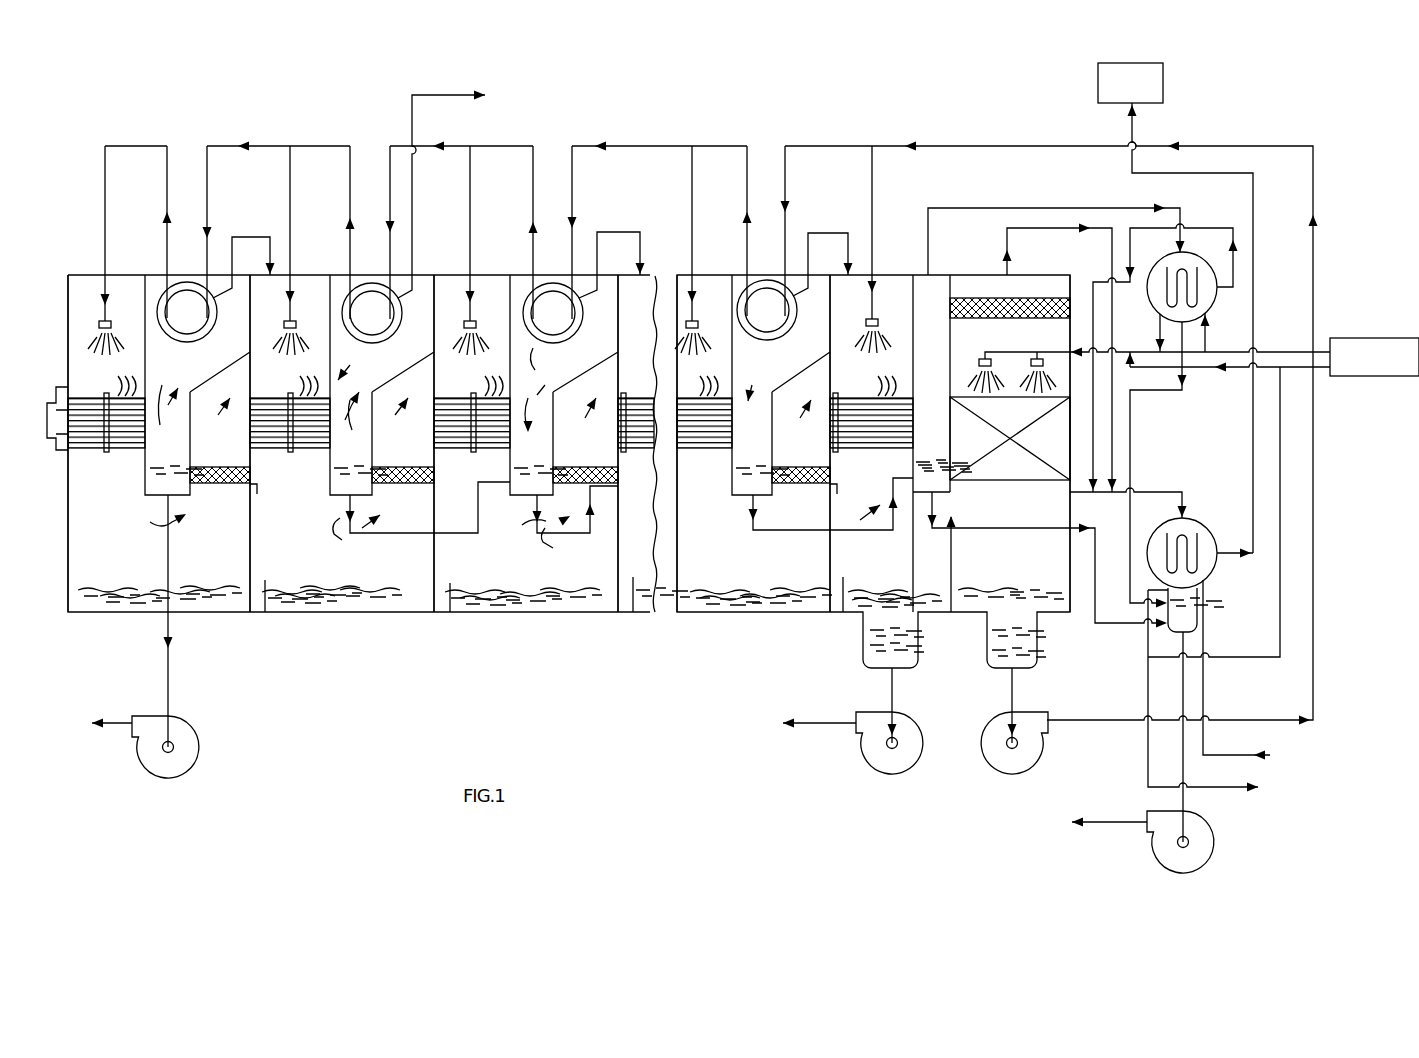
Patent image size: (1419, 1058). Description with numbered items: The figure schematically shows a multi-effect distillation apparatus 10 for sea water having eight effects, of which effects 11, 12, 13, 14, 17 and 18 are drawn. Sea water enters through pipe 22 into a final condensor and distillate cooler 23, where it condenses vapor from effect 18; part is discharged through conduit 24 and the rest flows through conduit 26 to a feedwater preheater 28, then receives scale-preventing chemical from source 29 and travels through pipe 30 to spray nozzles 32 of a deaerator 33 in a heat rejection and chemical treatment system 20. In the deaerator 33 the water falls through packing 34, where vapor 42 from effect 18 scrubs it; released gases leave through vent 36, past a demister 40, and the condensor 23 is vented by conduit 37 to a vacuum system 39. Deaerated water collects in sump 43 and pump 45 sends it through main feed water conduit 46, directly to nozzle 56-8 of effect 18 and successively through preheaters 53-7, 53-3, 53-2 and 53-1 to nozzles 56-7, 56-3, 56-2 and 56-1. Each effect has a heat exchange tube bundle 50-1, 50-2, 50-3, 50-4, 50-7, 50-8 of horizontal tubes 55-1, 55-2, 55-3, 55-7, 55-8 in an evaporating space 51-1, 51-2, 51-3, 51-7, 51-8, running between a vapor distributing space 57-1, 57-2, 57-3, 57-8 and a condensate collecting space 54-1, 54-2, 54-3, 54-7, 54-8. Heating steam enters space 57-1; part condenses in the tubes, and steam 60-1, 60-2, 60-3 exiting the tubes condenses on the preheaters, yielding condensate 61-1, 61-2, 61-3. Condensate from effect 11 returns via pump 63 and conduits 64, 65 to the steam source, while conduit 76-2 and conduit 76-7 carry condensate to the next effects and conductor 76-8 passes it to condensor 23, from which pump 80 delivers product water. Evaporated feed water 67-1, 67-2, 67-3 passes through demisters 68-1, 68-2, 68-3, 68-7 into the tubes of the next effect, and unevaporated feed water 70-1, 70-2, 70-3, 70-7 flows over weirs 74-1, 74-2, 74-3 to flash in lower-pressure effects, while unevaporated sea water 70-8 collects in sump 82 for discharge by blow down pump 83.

The multi-effect distillation apparatus 10 is at (677, 632).
The effect 11 is at (213, 618).
The effect 12 is at (390, 622).
The effect 13 is at (559, 619).
The effect 14 is at (618, 622).
The effect 17 is at (768, 624).
The effect 18 is at (848, 617).
The heat rejection and chemical treatment system 20 is at (1200, 445).
The pipe 22 is at (1240, 755).
The final condensor and distillate cooler 23 is at (1222, 539).
The conduit 24 is at (1242, 790).
The conduit 26 is at (1278, 622).
The feedwater preheater 28 is at (1214, 300).
The source 29 is at (1385, 378).
The pipe 30 is at (1150, 352).
The spray nozzles 32 is at (1038, 361).
The deaerator 33 is at (1070, 510).
The packing 34 is at (1052, 452).
The vent 36 is at (1039, 228).
The conduit 37 is at (1255, 262).
The vacuum system 39 is at (1164, 87).
The demister 40 is at (992, 306).
The vapor 42 is at (947, 522).
The sump 43 is at (1040, 649).
The pump 45 is at (1010, 774).
The main feed water conduit 46 is at (984, 144).
The heat exchange tube bundle 50-1 is at (91, 450).
The heat exchange tube bundle 50-2 is at (279, 450).
The heat exchange tube bundle 50-3 is at (446, 450).
The heat exchange tube bundle 50-4 is at (652, 440).
The heat exchange tube bundle 50-7 is at (711, 456).
The heat exchange tube bundle 50-8 is at (857, 452).
The evaporating space 51-1 is at (108, 532).
The evaporating space 51-2 is at (306, 552).
The evaporating space 51-3 is at (481, 582).
The evaporating space 51-7 is at (722, 575).
The evaporating space 51-8 is at (882, 555).
The feed water preheater 53-1 is at (212, 325).
The feed water preheater 53-2 is at (396, 325).
The feed water preheater 53-3 is at (579, 288).
The feed water preheater 53-7 is at (794, 292).
The condensate collecting space 54-1 is at (224, 368).
The condensate collecting space 54-2 is at (404, 380).
The condensate collecting space 54-3 is at (602, 367).
The condensate collecting space 54-7 is at (807, 369).
The condensate collecting space 54-8 is at (922, 297).
The heat exchange tubes 55-1 is at (106, 379).
The heat exchange tubes 55-2 is at (293, 379).
The heat exchange tubes 55-3 is at (476, 379).
The heat exchange tubes 55-7 is at (699, 379).
The heat exchange tubes 55-8 is at (870, 379).
The nozzle 56-1 is at (100, 318).
The nozzle 56-2 is at (292, 319).
The nozzle 56-3 is at (473, 319).
The nozzle 56-7 is at (694, 319).
The nozzle 56-8 is at (867, 326).
The vapor distributing space 57-1 is at (56, 390).
The vapor distributing space 57-2 is at (258, 488).
The vapor distributing space 57-3 is at (465, 488).
The vapor distributing space 57-8 is at (835, 502).
The steam 60-1 is at (165, 396).
The steam 60-2 is at (370, 387).
The steam 60-3 is at (530, 388).
The condensate 61-1 is at (170, 476).
The condensate 61-2 is at (359, 385).
The condensate 61-3 is at (539, 385).
The pump 63 is at (189, 778).
The conduit 64 is at (169, 687).
The conduit 65 is at (113, 722).
The evaporated feed water 67-1 is at (180, 526).
The evaporated feed water 67-2 is at (344, 541).
The evaporated feed water 67-3 is at (551, 541).
The demister element 68-1 is at (208, 468).
The demister 68-2 is at (388, 470).
The demister 68-3 is at (604, 466).
The demister 68-7 is at (802, 467).
The unevaporated feed water 70-1 is at (110, 602).
The unevaporated feed water 70-2 is at (331, 585).
The unevaporated feed water 70-3 is at (532, 598).
The unevaporated feed water 70-7 is at (766, 597).
The unevaporated sea water 70-8 is at (892, 597).
The weir 74-1 is at (285, 587).
The weir 74-2 is at (454, 618).
The weir 74-3 is at (648, 590).
The conduit 76-2 is at (367, 541).
The conduit 76-7 is at (773, 538).
The conductor 76-8 is at (955, 533).
The pump 80 is at (1187, 860).
The sump 82 is at (918, 668).
The blow down pump 83 is at (900, 772).